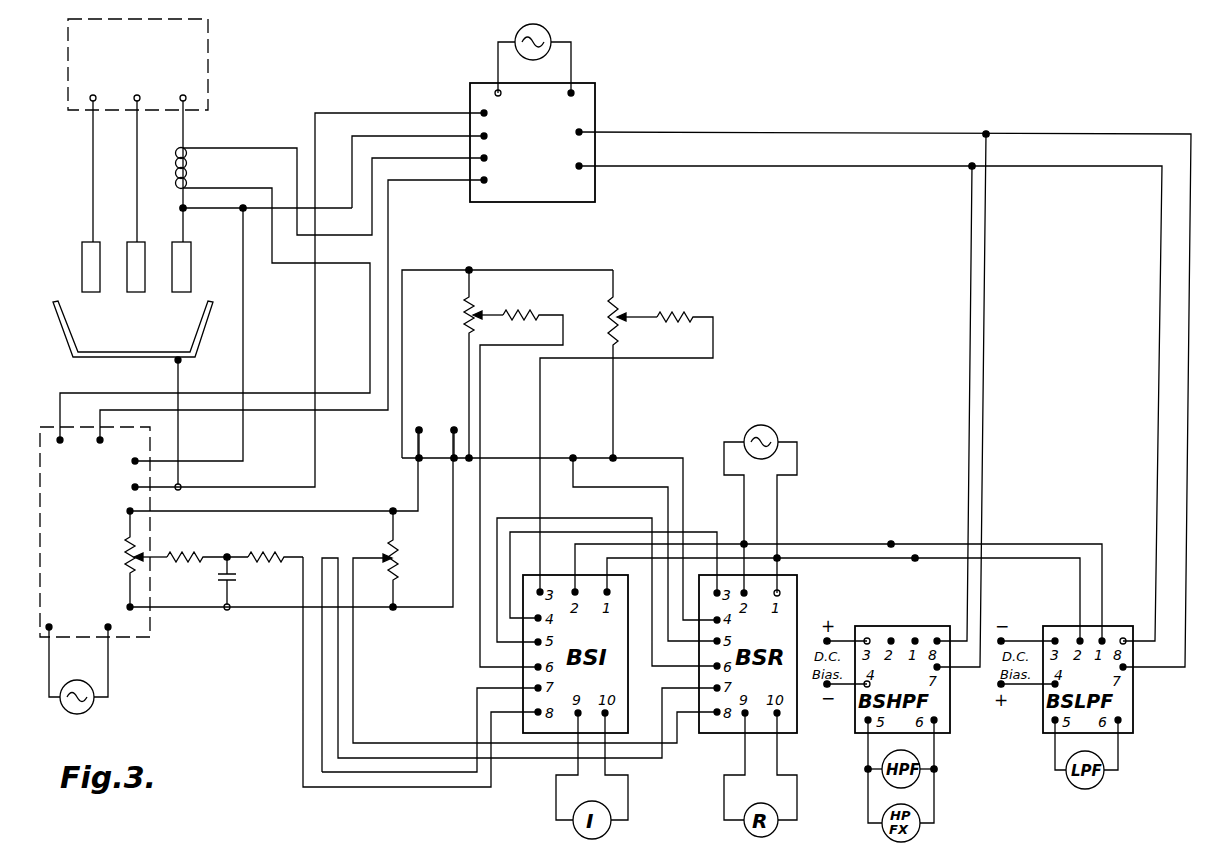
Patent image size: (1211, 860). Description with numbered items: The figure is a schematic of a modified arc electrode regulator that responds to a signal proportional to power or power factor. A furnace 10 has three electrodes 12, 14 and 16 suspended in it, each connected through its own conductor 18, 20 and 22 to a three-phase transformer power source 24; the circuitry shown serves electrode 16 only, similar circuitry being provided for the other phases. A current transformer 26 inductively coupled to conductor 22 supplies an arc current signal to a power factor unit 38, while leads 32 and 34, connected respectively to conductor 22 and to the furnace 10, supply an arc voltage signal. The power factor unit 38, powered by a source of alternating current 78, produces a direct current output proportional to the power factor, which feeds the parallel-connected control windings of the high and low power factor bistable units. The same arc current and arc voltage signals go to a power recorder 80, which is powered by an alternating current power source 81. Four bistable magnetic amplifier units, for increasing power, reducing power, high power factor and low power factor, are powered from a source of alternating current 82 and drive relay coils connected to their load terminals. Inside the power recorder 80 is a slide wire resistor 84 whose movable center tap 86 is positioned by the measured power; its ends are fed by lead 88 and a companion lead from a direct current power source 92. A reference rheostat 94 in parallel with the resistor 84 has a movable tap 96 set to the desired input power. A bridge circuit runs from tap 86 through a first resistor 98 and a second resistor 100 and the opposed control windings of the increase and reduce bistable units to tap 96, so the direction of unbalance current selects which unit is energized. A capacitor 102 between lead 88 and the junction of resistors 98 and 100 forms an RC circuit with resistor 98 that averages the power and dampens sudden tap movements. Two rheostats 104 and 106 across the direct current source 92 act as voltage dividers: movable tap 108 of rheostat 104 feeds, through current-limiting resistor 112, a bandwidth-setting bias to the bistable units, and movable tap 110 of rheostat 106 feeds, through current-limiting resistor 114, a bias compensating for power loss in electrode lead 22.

The furnace 10 is at (58, 332).
The electrode 12 is at (82, 244).
The electrode 14 is at (128, 244).
The electrode 16 is at (177, 241).
The conductor 18 is at (92, 181).
The conductor 20 is at (136, 190).
The conductor 22 is at (182, 198).
The three-phase transformer power source 24 is at (209, 94).
The current transformer 26 is at (194, 167).
The lead 32 is at (215, 212).
The lead 34 is at (179, 382).
The power factor unit 38 is at (597, 94).
The source of alternating current 78 is at (553, 36).
The power recorder 80 is at (132, 641).
The power source 81 is at (91, 709).
The source of alternating current 82 is at (773, 428).
The slide wire resistor 84 is at (126, 549).
The movable center tap 86 is at (146, 553).
The lead 88 is at (268, 611).
The direct current power source 92 is at (457, 392).
The reference rheostat 94 is at (400, 578).
The movable tap 96 is at (384, 556).
The first resistor 98 is at (178, 565).
The second resistor 100 is at (277, 556).
The capacitor 102 is at (237, 577).
The rheostat 104 is at (465, 304).
The rheostat 106 is at (618, 299).
The movable tap 108 is at (486, 312).
The movable tap 110 is at (628, 321).
The current-limiting resistor 112 is at (531, 312).
The current-limiting resistor 114 is at (691, 317).